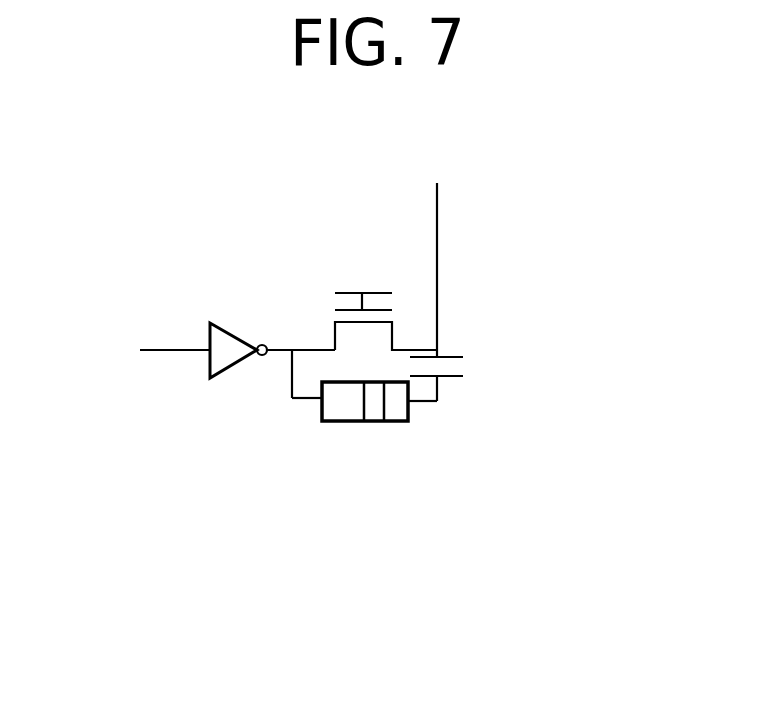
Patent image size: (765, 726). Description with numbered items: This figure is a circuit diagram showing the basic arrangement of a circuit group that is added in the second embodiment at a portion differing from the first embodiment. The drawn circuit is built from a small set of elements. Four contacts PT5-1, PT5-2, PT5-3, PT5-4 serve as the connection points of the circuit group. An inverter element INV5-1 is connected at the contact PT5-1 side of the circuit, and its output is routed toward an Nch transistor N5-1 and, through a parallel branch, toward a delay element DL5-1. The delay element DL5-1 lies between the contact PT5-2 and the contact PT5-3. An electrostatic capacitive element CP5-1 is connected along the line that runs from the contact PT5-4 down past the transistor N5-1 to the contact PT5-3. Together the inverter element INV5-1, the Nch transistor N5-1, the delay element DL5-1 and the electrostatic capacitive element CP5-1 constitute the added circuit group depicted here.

The contact PT5-1 is at (178, 350).
The inverter element INV5-1 is at (208, 326).
The Nch transistor N5-1 is at (327, 328).
The contact PT5-2 is at (292, 399).
The delay element DL5-1 is at (348, 421).
The contact PT5-3 is at (425, 401).
The electrostatic capacitive element CP5-1 is at (468, 367).
The contact PT5-4 is at (437, 213).